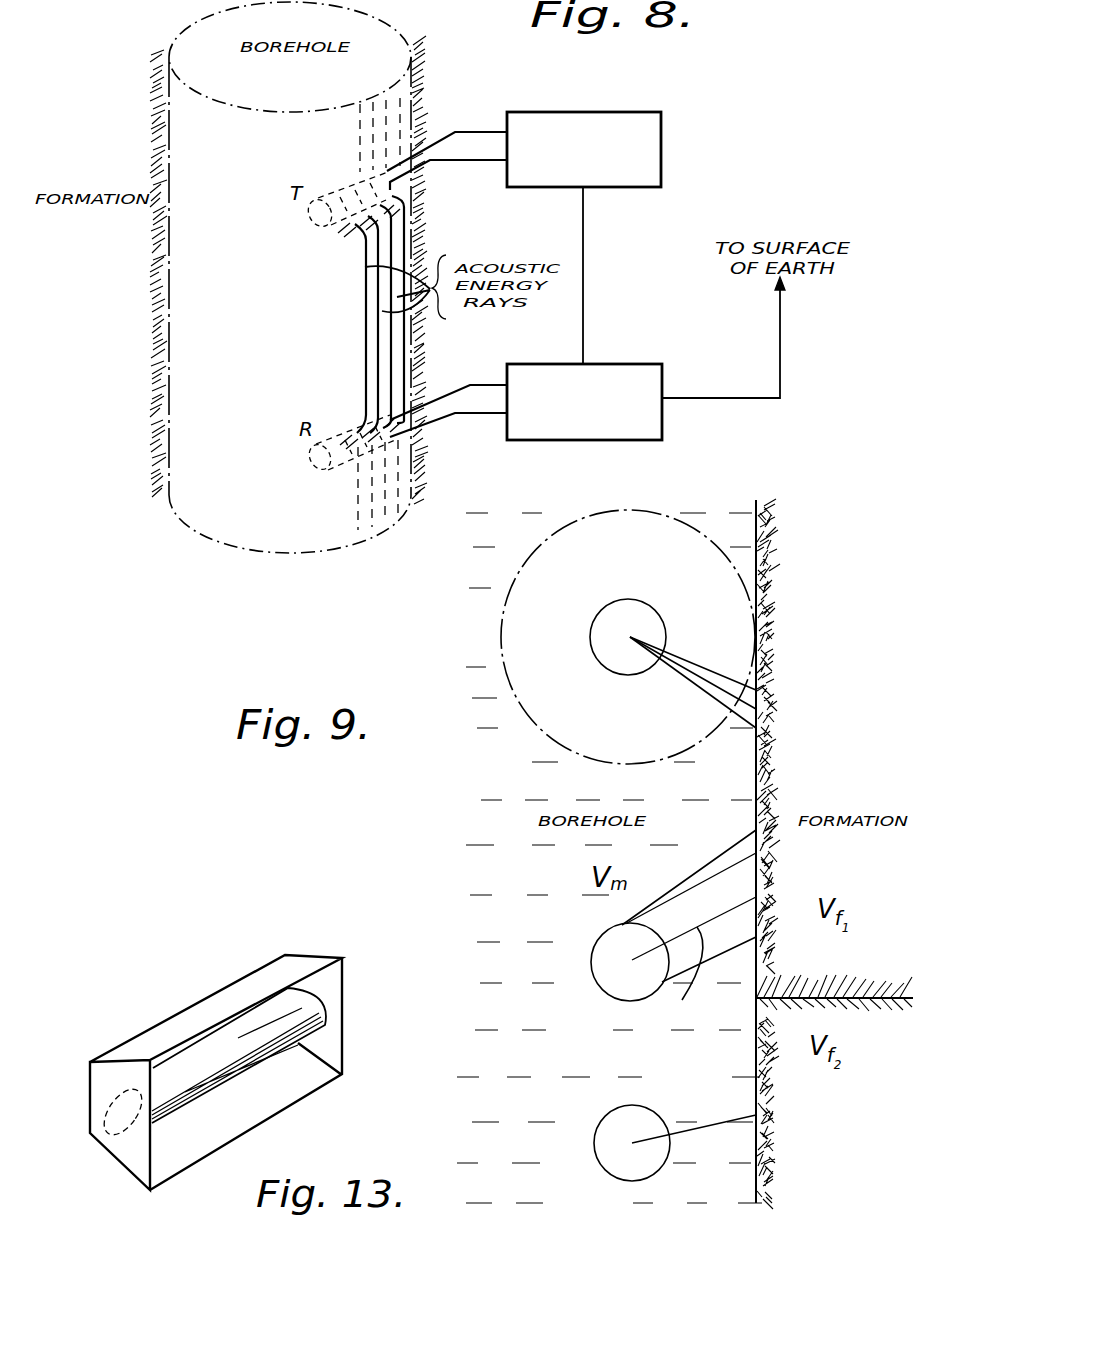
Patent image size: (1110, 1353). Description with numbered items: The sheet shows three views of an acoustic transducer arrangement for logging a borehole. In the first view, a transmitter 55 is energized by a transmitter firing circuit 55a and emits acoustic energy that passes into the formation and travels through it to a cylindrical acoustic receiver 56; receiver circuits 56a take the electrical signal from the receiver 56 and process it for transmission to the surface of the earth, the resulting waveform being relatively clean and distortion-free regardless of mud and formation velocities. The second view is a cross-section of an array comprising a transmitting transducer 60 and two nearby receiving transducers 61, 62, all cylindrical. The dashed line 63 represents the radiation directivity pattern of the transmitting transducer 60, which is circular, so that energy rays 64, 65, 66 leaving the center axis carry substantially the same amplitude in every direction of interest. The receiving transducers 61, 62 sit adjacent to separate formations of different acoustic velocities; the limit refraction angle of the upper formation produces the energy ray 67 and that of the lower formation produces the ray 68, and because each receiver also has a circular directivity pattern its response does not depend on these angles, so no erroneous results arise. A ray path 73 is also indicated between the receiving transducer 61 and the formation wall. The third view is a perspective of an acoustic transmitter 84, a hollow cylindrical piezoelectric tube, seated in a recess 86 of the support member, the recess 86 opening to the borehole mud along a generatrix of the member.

In FIG. 8, the transmitter 55 is at (335, 187).
In FIG. 8, the cylindrical acoustic receiver 56 is at (350, 468).
In FIG. 8, the transmitter firing circuit 55a is at (634, 112).
In FIG. 8, the receiver circuits 56a is at (640, 364).
In FIG. 9, the transmitting transducer 60 is at (590, 651).
In FIG. 9, the receiving transducer 61 is at (605, 992).
In FIG. 9, the receiving transducer 62 is at (613, 1181).
In FIG. 9, the radiation directivity pattern 63 is at (528, 715).
In FIG. 9, the energy ray 64 is at (698, 662).
In FIG. 9, the energy ray 65 is at (728, 718).
In FIG. 9, the energy ray 66 is at (707, 698).
In FIG. 9, the energy ray 67 is at (682, 1000).
In FIG. 9, the ray 68 is at (708, 1122).
In FIG. 9, the ray path 73 is at (698, 862).
In FIG. 13, the acoustic transmitter 84 is at (305, 1007).
In FIG. 13, the recess 86 is at (282, 1105).